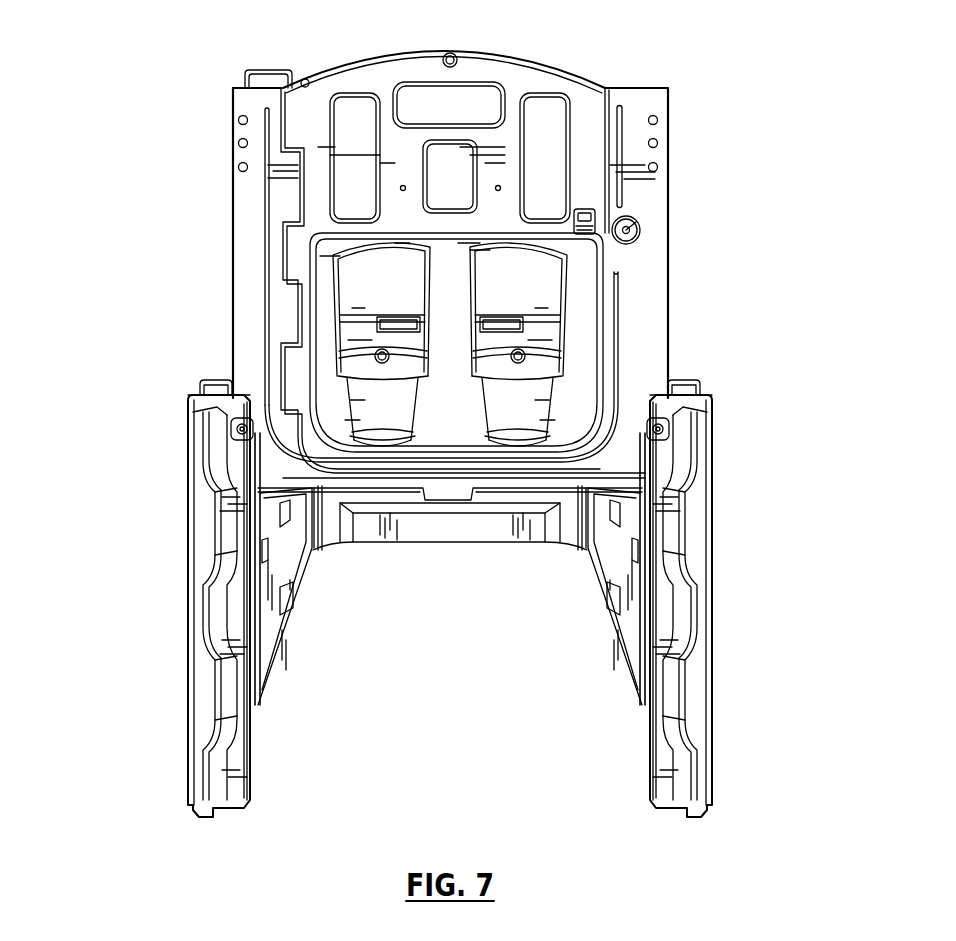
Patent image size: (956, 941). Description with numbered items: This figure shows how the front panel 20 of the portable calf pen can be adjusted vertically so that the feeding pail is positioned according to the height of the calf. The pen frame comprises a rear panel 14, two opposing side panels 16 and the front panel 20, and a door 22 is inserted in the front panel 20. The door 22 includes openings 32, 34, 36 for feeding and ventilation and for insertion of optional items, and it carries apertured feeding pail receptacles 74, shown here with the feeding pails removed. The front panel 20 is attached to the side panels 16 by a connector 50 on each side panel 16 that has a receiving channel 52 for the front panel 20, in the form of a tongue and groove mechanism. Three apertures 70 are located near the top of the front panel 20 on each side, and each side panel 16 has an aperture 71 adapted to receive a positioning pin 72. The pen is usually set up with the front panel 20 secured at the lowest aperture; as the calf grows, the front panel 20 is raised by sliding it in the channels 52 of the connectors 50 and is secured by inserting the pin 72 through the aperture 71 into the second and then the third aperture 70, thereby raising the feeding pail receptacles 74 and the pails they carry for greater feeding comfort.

The rear panel 14 is at (447, 524).
The side panels 16 is at (200, 467).
The front panel 20 is at (640, 105).
The door 22 is at (363, 75).
The opening 32 is at (348, 115).
The opening 34 is at (453, 160).
The opening 36 is at (540, 113).
The connector 50 is at (210, 382).
The receiving channel 52 is at (178, 386).
The aperture 70 is at (237, 166).
The aperture 71 is at (266, 432).
The positioning pin 72 is at (242, 422).
The feeding pail receptacle 74 is at (328, 358).